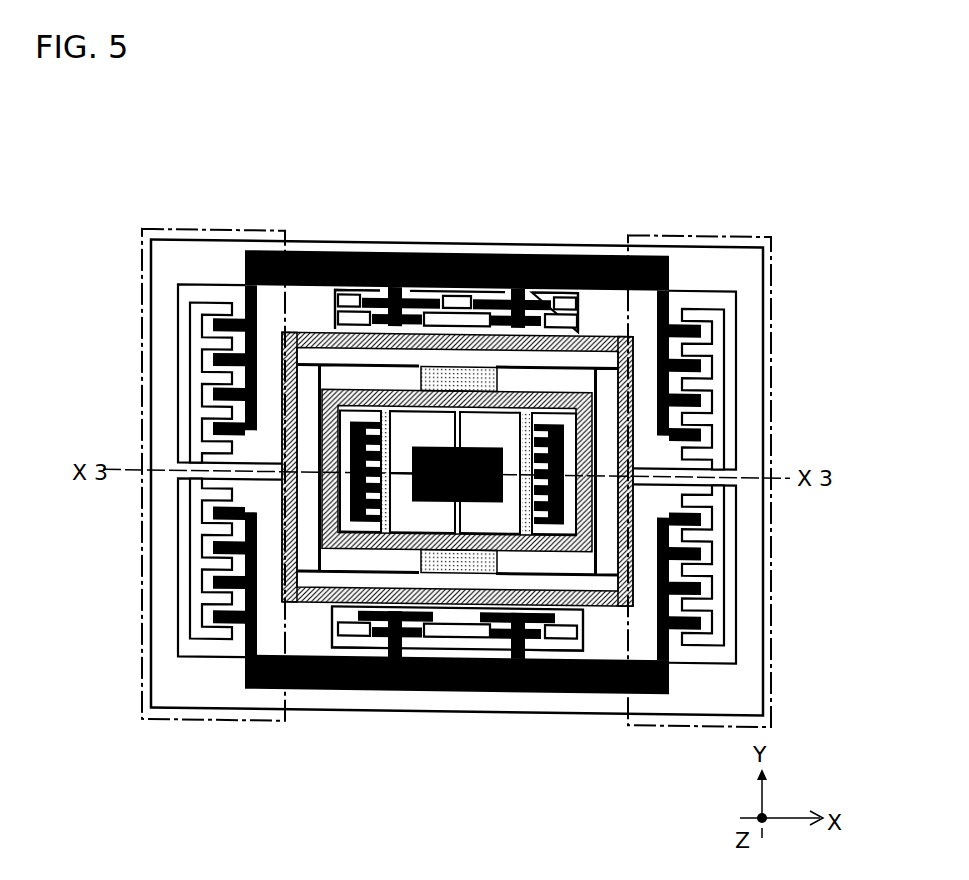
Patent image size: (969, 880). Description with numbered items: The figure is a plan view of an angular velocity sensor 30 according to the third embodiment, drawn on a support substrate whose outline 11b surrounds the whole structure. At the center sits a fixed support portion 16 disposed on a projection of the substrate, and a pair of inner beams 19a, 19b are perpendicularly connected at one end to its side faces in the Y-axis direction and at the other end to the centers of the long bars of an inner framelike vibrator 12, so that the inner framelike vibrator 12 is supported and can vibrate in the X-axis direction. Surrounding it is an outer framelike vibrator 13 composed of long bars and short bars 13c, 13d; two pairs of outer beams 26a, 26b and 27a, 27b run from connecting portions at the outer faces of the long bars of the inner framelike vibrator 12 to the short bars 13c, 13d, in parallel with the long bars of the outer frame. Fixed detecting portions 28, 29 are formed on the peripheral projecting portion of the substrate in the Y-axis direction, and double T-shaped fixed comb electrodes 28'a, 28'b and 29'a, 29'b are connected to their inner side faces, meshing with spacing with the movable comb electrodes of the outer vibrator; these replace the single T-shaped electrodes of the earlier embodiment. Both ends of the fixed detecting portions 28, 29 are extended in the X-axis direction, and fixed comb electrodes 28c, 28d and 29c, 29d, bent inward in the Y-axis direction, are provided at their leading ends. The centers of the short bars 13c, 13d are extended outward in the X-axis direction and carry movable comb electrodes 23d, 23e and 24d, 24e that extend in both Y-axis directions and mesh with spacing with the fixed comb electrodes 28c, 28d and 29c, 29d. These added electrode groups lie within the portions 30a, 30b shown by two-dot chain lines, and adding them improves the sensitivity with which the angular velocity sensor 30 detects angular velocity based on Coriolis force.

The angular velocity sensor 30 is at (804, 201).
The added portion 30a is at (712, 238).
The added portion 30b is at (203, 230).
The substrate 11b is at (765, 287).
The inner framelike vibrator 12 is at (590, 392).
The outer framelike vibrator 13 is at (615, 336).
The short bar 13c is at (633, 440).
The short bar 13d is at (282, 445).
The fixed support portion 16 is at (471, 447).
The inner beam 19a is at (453, 428).
The inner beam 19b is at (453, 506).
The movable comb electrode 23d is at (718, 385).
The movable comb electrode 23e is at (200, 392).
The movable comb electrode 24d is at (707, 543).
The movable comb electrode 24e is at (200, 534).
The outer beam 26a is at (540, 292).
The outer beam 26b is at (329, 363).
The outer beam 27a is at (588, 578).
The outer beam 27b is at (322, 578).
The fixed detecting portion 28 is at (457, 314).
The double T-shaped fixed comb electrode 28'a is at (505, 235).
The double T-shaped fixed comb electrode 28'b is at (400, 245).
The fixed comb electrode 28c is at (703, 327).
The fixed comb electrode 28d is at (246, 340).
The fixed detecting portion 29 is at (457, 642).
The double T-shaped fixed comb electrode 29'a is at (517, 695).
The double T-shaped fixed comb electrode 29'b is at (395, 694).
The fixed comb electrode 29c is at (670, 578).
The fixed comb electrode 29d is at (246, 566).